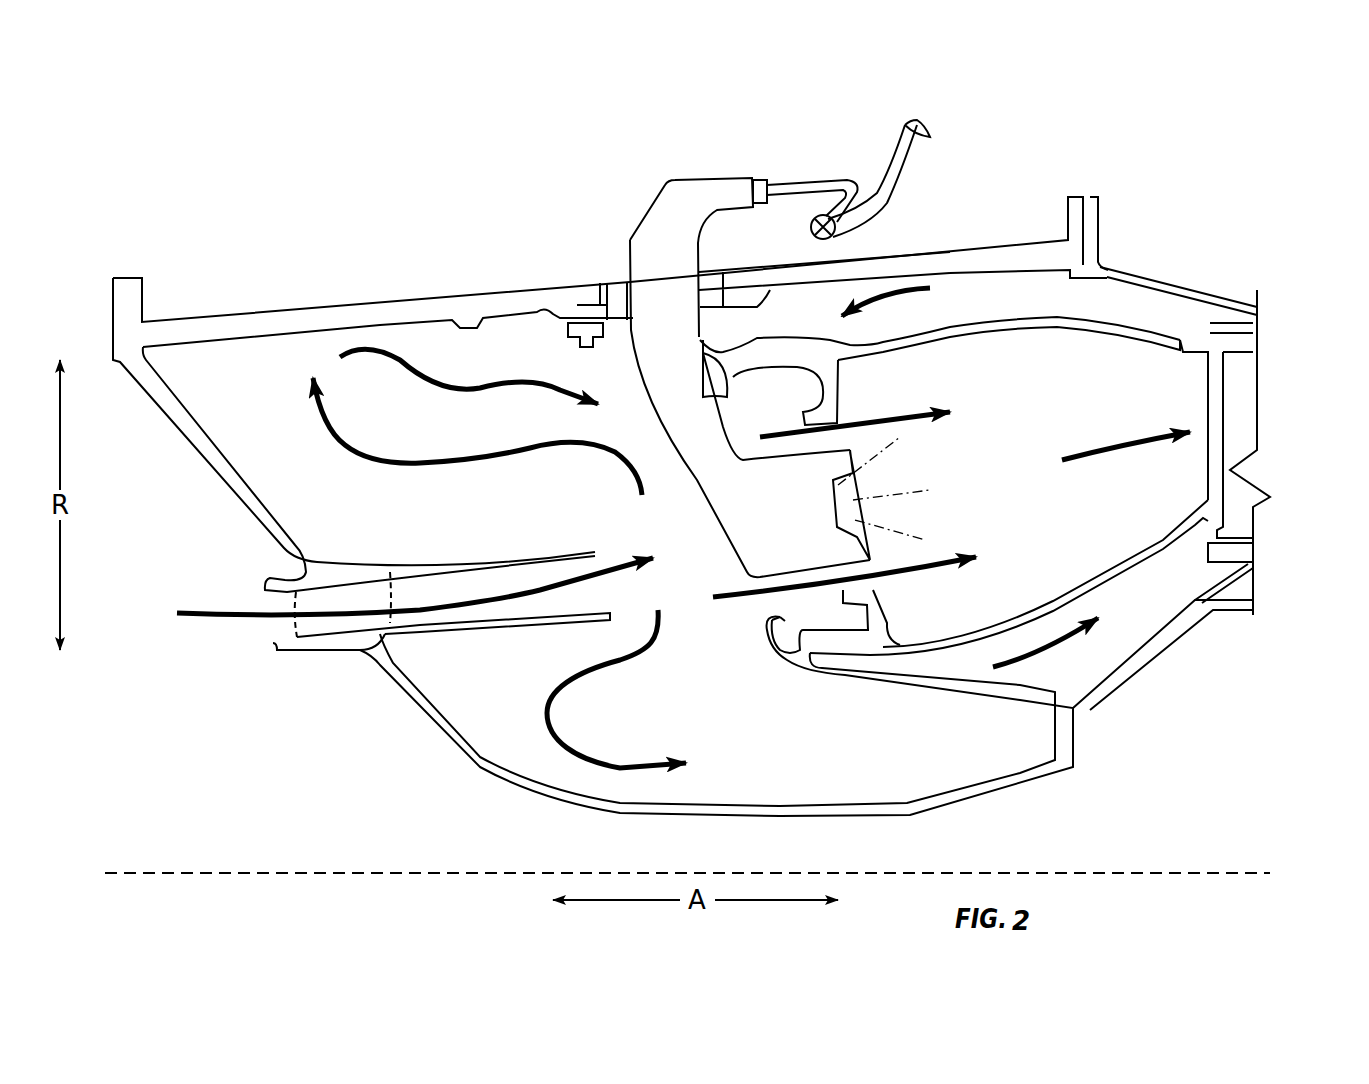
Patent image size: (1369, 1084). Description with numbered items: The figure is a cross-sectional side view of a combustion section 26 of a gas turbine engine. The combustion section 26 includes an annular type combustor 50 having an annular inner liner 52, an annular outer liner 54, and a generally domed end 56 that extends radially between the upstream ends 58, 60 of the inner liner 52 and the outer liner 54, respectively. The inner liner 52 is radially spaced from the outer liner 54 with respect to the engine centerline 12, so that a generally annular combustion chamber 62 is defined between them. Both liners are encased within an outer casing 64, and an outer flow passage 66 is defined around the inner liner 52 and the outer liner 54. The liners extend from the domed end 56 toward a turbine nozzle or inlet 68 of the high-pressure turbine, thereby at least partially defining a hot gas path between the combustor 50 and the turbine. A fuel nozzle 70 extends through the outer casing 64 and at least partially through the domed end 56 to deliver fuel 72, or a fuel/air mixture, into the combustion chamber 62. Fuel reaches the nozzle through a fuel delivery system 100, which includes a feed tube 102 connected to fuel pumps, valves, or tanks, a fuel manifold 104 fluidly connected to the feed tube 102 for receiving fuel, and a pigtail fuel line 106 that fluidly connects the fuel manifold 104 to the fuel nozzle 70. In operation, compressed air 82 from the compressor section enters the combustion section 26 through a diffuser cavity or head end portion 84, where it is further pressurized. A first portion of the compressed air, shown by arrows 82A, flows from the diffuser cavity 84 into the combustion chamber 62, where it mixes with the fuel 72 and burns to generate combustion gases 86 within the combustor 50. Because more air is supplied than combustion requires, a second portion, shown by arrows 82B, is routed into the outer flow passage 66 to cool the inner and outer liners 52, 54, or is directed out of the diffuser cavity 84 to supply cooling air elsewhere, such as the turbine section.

The engine centerline 12 is at (1163, 872).
The combustion section 26 is at (995, 155).
The annular type combustor 50 is at (956, 306).
The annular inner liner 52 is at (1048, 607).
The annular outer liner 54 is at (915, 342).
The domed end 56 is at (762, 645).
The upstream end of the inner liner 58 is at (845, 670).
The upstream end of the outer liner 60 is at (790, 322).
The combustion chamber 62 is at (1020, 450).
The outer casing 64 is at (1033, 222).
The outer flow passage 66 is at (1100, 298).
The turbine nozzle or inlet 68 is at (1237, 400).
The fuel nozzle 70 is at (750, 377).
The fuel 72 is at (905, 493).
The compressed air 82 is at (448, 592).
The first portion of compressed air 82A is at (857, 410).
The second portion of compressed air 82B is at (412, 368).
The diffuser cavity 84 is at (473, 363).
The combustion gases 86 is at (1113, 440).
The fuel delivery system 100 is at (861, 143).
The feed tube 102 is at (897, 147).
The fuel manifold 104 is at (818, 217).
The pigtail fuel line 106 is at (823, 182).